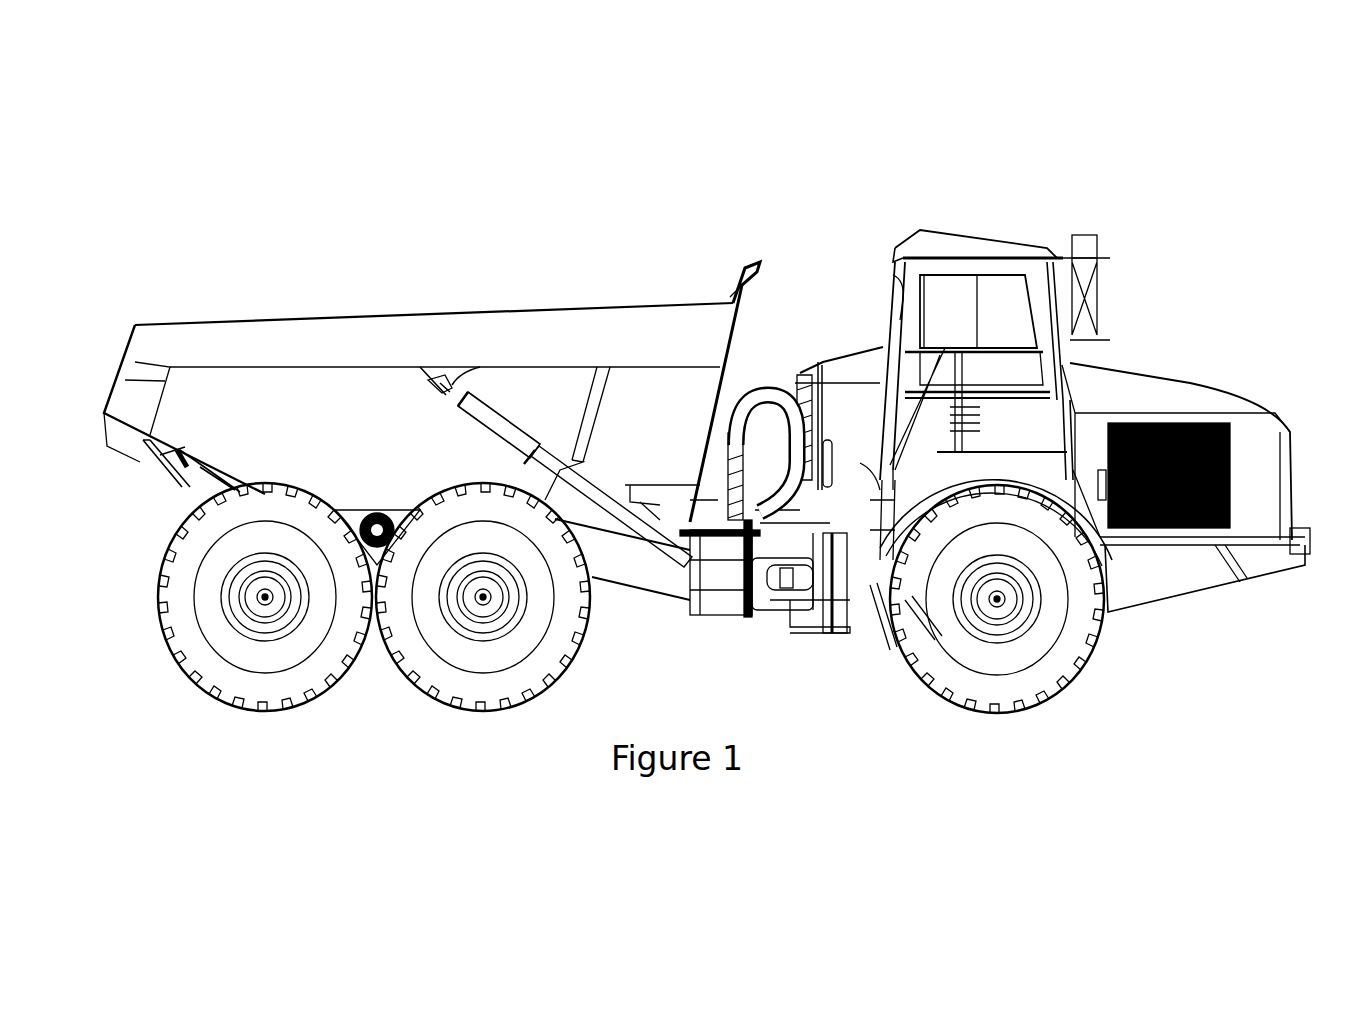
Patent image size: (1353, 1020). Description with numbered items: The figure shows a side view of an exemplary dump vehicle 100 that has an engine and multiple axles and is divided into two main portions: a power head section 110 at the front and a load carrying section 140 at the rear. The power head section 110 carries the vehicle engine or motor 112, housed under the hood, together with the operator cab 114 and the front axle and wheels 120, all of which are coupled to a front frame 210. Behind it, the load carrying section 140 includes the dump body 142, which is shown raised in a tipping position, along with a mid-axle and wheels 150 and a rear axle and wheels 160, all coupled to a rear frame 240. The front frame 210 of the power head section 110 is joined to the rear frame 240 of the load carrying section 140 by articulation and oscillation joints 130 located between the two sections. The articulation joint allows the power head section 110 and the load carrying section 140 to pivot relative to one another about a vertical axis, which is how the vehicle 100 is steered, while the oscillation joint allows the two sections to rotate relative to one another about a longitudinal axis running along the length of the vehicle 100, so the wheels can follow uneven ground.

The dump vehicle 100 is at (847, 152).
The power head section 110 is at (1129, 210).
The vehicle engine or motor 112 is at (1194, 374).
The operator cab 114 is at (944, 235).
The front axle and wheels 120 is at (1130, 655).
The articulation and oscillation joints 130 is at (797, 647).
The load carrying section 140 is at (508, 228).
The dump body 142 is at (533, 312).
The mid-axle and wheels 150 is at (600, 650).
The rear axle and wheels 160 is at (166, 674).
The front frame 210 is at (1227, 605).
The rear frame 240 is at (655, 607).